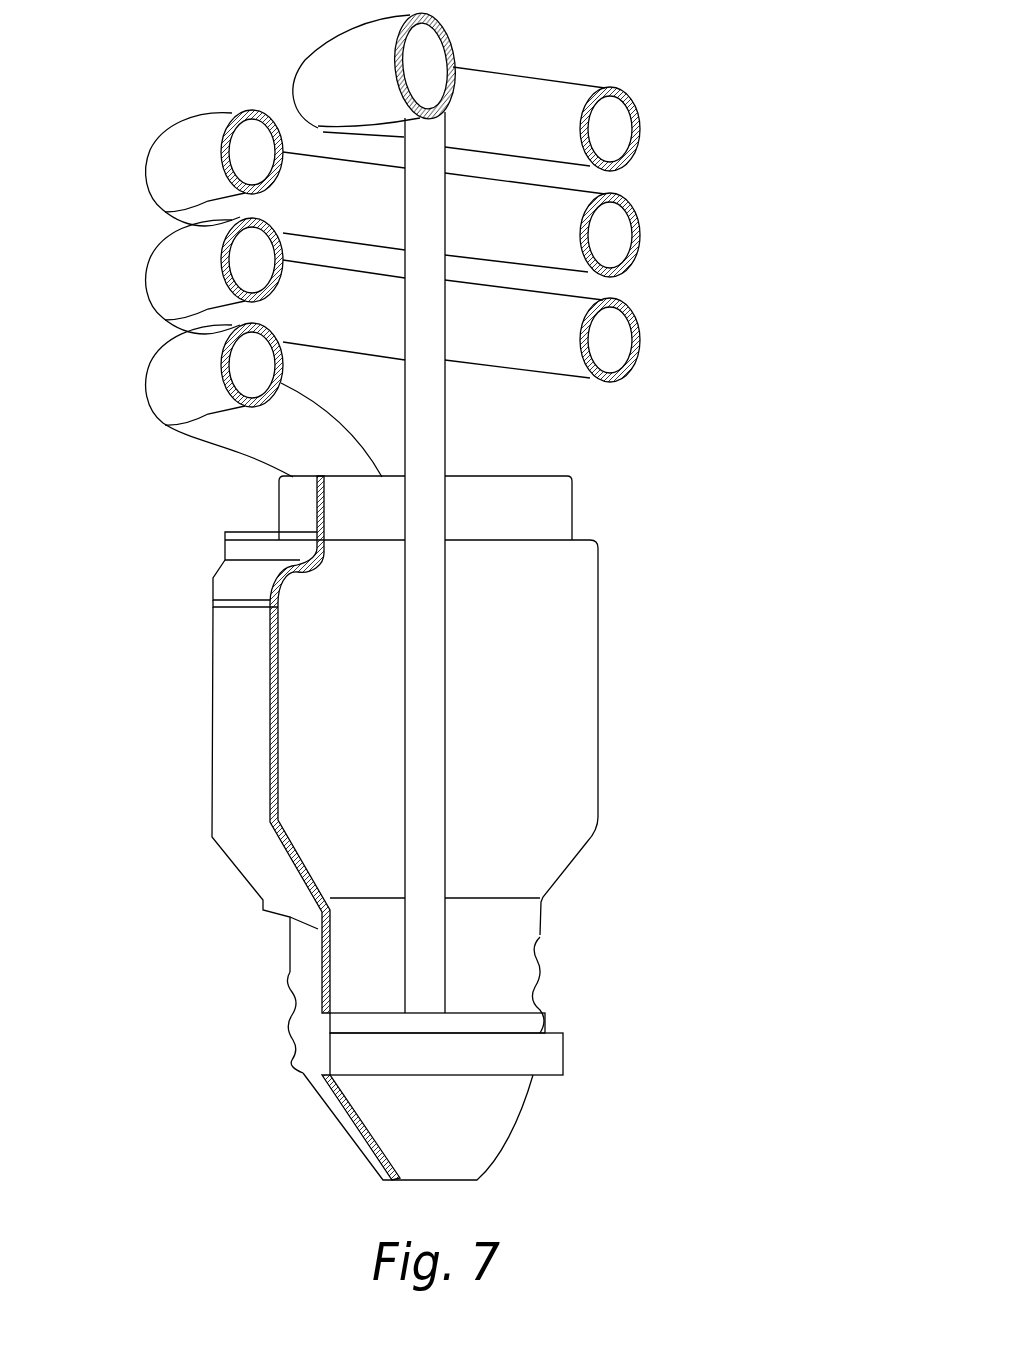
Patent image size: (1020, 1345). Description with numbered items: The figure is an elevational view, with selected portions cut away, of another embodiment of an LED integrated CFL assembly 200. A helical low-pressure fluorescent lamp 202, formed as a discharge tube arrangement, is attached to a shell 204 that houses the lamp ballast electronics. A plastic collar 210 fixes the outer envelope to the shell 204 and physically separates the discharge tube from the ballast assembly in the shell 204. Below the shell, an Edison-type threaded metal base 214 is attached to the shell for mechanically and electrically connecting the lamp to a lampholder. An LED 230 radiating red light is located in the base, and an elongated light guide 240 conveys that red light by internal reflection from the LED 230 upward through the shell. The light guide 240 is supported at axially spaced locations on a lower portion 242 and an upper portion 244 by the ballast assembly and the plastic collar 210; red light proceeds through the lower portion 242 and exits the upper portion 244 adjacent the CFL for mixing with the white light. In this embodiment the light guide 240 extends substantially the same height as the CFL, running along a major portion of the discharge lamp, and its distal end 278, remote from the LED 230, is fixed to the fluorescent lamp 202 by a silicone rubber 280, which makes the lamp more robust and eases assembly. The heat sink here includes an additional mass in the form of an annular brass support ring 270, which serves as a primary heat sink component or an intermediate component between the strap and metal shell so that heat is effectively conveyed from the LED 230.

The LED integrated CFL assembly 200 is at (733, 138).
The helical low-pressure fluorescent lamp 202 is at (142, 170).
The shell 204 is at (212, 748).
The plastic collar 210 is at (226, 532).
The Edison-type threaded metal base 214 is at (328, 1105).
The LED 230 is at (468, 1028).
The light guide 240 is at (458, 393).
The lower portion 242 is at (432, 957).
The upper portion 244 is at (443, 427).
The brass support ring 270 is at (550, 1052).
The distal end 278 is at (413, 135).
The silicone rubber 280 is at (445, 117).